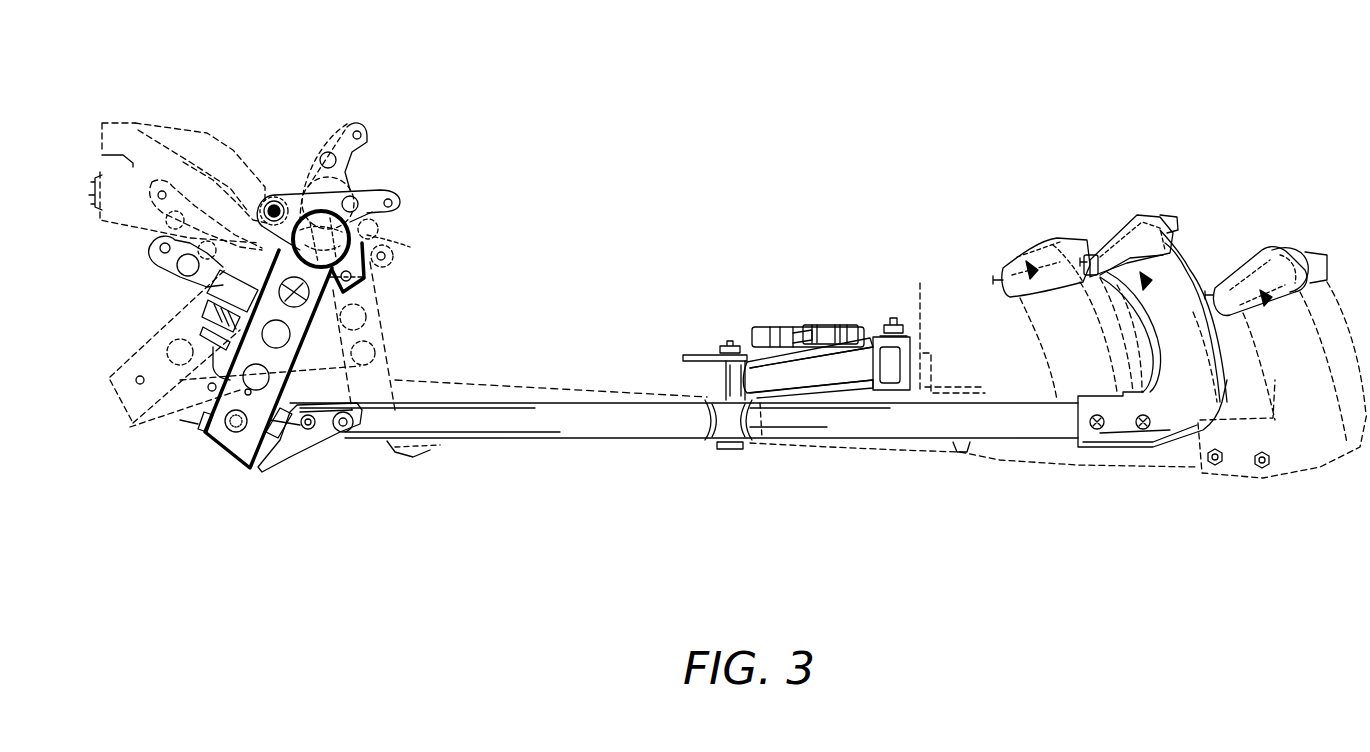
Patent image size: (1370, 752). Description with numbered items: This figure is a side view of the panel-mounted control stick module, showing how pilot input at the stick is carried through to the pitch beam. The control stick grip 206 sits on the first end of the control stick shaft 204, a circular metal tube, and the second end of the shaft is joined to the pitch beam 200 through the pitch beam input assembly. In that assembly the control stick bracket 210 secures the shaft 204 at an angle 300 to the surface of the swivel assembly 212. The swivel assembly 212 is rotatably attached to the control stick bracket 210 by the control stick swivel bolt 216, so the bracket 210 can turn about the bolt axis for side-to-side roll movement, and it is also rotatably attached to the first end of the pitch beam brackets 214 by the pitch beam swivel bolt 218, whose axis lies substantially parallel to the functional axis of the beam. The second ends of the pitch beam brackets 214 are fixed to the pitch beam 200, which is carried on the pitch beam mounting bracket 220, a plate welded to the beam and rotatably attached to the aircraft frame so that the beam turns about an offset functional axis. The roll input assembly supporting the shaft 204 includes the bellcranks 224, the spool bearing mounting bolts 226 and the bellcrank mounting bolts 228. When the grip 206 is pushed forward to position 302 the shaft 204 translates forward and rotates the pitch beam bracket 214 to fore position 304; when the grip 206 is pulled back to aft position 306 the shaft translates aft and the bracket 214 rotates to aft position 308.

The pitch beam 200 is at (345, 237).
The control stick shaft 204 is at (588, 407).
The control stick grip 206 is at (1147, 287).
The control stick bracket 210 is at (310, 440).
The swivel assembly 212 is at (223, 443).
The pitch beam brackets 214 is at (368, 291).
The control stick swivel bolt 216 is at (198, 423).
The pitch beam swivel bolt 218 is at (236, 433).
The pitch beam mounting bracket 220 is at (300, 200).
The bellcranks 224 is at (803, 380).
The spool bearing mounting bolts 226 is at (730, 343).
The bellcrank mounting bolts 228 is at (897, 322).
The angle 300 is at (280, 437).
The forward position 302 is at (1028, 262).
The fore position 304 is at (137, 357).
The aft position 306 is at (1267, 307).
The aft position 308 is at (388, 334).